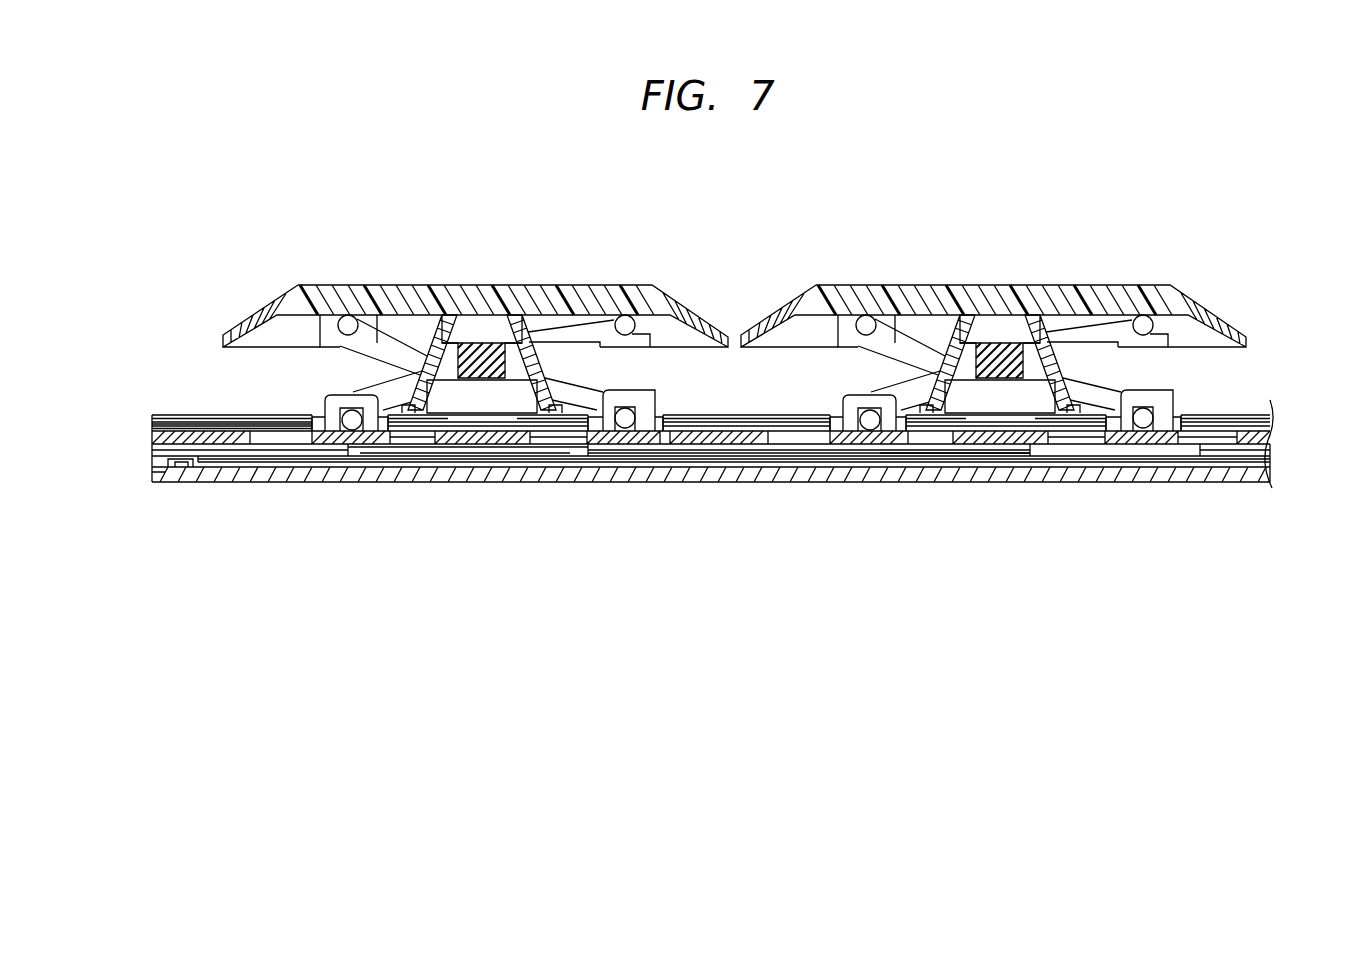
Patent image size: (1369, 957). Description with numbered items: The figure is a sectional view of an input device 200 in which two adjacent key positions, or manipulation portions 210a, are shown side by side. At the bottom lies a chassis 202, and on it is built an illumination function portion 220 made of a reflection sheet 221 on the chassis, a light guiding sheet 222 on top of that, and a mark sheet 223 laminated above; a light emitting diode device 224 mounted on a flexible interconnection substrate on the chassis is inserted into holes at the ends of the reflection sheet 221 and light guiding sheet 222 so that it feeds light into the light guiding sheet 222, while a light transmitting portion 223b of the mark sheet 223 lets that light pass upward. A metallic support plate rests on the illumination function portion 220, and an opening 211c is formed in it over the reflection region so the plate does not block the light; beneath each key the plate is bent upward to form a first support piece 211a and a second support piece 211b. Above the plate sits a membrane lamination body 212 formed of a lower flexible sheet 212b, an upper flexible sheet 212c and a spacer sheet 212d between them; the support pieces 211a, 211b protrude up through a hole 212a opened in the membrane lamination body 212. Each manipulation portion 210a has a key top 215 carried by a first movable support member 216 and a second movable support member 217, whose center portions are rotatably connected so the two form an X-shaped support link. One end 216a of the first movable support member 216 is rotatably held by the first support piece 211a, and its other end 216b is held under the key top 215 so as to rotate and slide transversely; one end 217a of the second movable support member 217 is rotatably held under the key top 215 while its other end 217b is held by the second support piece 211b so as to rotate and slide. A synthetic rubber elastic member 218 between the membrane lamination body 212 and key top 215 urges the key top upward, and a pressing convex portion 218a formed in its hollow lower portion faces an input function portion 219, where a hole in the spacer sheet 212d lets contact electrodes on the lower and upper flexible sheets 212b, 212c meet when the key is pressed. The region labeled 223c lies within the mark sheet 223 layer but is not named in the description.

The input device 200 is at (790, 216).
The chassis 202 is at (296, 479).
The manipulation portion 210a is at (590, 258).
The first support piece 211a is at (330, 394).
The second support piece 211b is at (642, 392).
The opening 211c is at (415, 438).
The membrane lamination body 212 is at (1280, 413).
The hole 212a is at (313, 417).
The lower flexible sheet 212b is at (152, 428).
The upper flexible sheet 212c is at (186, 415).
The spacer sheet 212d is at (152, 422).
The key top 215 is at (481, 360).
The first movable support member 216 is at (553, 343).
The one end of first movable support member 216a is at (352, 410).
The other end of first movable support member 216b is at (633, 314).
The second movable support member 217 is at (394, 345).
The one end of second movable support member 217a is at (350, 314).
The other end of second movable support member 217b is at (623, 408).
The elastic member 218 is at (434, 343).
The pressing convex portion 218a is at (508, 327).
The input function portion 219 is at (476, 448).
The illumination function portion 220 is at (1280, 440).
The reflection sheet 221 is at (155, 476).
The light guiding sheet 222 is at (152, 460).
The mark sheet 223 is at (152, 452).
The light transmitting portion 223b is at (640, 456).
The opening 223c is at (527, 462).
The light emitting diode device 224 is at (180, 468).